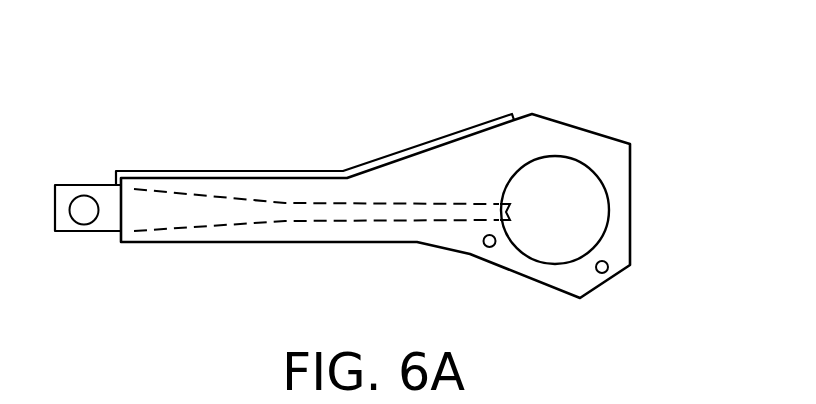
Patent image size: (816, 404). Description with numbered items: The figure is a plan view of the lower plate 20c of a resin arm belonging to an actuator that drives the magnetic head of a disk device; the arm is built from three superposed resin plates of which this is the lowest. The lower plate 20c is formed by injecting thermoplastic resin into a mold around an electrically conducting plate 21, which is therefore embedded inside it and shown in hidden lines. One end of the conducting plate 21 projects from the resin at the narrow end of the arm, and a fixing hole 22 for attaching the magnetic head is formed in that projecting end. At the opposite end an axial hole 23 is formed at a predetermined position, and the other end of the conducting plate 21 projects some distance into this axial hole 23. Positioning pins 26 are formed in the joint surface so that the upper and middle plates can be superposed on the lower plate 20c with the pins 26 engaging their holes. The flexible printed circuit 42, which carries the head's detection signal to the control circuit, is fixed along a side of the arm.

The lower plate 20c is at (568, 140).
The flexible printed circuit 42 is at (424, 145).
The fixing holes 22 is at (82, 206).
The electrically conducting plate 21 is at (232, 202).
The axial hole 23 is at (605, 192).
The positioning pin 26 is at (484, 244).